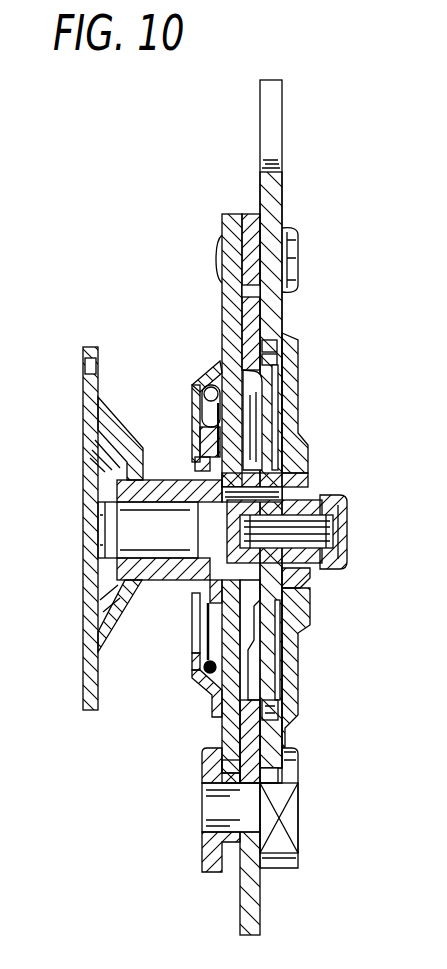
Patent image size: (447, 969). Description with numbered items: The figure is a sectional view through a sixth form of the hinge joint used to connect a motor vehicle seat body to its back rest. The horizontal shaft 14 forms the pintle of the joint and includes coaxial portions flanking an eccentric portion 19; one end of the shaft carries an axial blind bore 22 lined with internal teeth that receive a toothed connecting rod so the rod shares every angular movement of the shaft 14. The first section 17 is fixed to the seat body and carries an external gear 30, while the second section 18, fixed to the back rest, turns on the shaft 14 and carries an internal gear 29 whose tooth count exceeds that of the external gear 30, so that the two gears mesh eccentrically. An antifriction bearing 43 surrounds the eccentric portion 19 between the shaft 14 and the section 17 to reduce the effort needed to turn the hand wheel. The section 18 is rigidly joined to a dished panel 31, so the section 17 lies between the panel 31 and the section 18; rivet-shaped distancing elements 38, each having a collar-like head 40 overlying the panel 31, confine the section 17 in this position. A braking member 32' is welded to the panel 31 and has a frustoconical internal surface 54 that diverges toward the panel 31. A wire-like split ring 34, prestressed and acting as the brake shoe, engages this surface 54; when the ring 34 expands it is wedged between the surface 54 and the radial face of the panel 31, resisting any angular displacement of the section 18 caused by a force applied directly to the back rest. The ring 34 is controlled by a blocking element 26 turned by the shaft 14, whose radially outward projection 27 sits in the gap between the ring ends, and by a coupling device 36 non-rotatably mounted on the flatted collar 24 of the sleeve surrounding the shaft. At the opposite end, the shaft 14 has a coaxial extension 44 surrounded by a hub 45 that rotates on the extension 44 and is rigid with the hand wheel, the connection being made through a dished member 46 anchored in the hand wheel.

The shaft 14 is at (350, 498).
The first section 17 is at (242, 903).
The second section 18 is at (272, 190).
The eccentric portion 19 is at (310, 587).
The axial blind bore 22 is at (337, 552).
The collar 24 is at (193, 583).
The blocking element 26 is at (213, 603).
The projection 27 is at (200, 417).
The internal gear 29 is at (284, 341).
The external gear 30 is at (276, 362).
The dished panel 31 is at (233, 312).
The braking member 32' is at (180, 402).
The split ring 34 is at (230, 640).
The coupling device 36 is at (212, 585).
The distancing element 38 is at (300, 833).
The head 40 is at (207, 848).
The antifriction bearing 43 is at (300, 445).
The extension 44 is at (135, 532).
The hub 45 is at (167, 483).
The dished member 46 is at (85, 383).
The frustoconical internal surface 54 is at (262, 686).